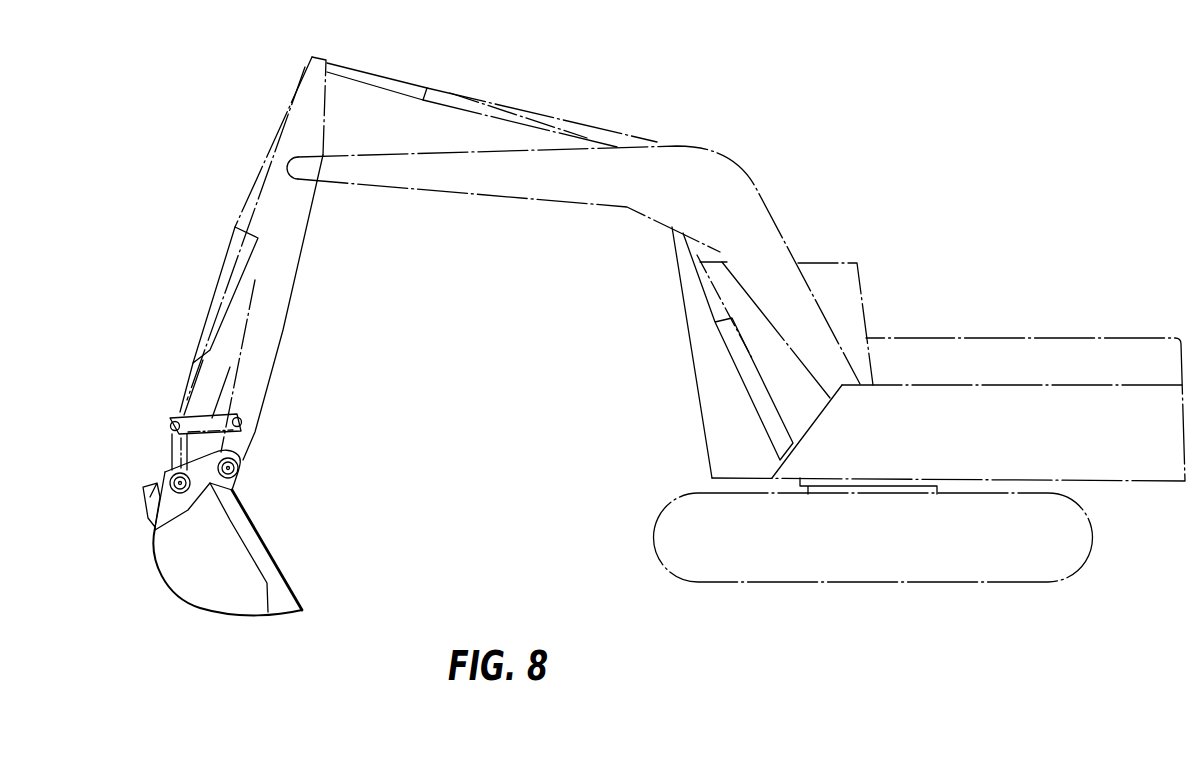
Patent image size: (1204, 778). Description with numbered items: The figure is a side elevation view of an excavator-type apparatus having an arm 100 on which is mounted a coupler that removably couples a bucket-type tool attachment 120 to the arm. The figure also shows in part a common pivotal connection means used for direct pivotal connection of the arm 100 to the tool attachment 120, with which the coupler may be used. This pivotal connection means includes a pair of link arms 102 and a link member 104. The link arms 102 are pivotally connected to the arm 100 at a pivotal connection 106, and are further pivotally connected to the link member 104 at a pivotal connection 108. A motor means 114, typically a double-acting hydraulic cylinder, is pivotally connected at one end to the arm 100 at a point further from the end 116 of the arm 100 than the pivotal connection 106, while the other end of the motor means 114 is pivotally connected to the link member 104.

The arm 100 is at (265, 332).
The link arms 102 is at (210, 420).
The link member 104 is at (172, 453).
The pivotal connection 106 is at (242, 416).
The pivotal connection 108 is at (170, 423).
The motor means 114 is at (193, 362).
The end of arm 116 is at (247, 465).
The bucket-type tool attachment 120 is at (173, 573).